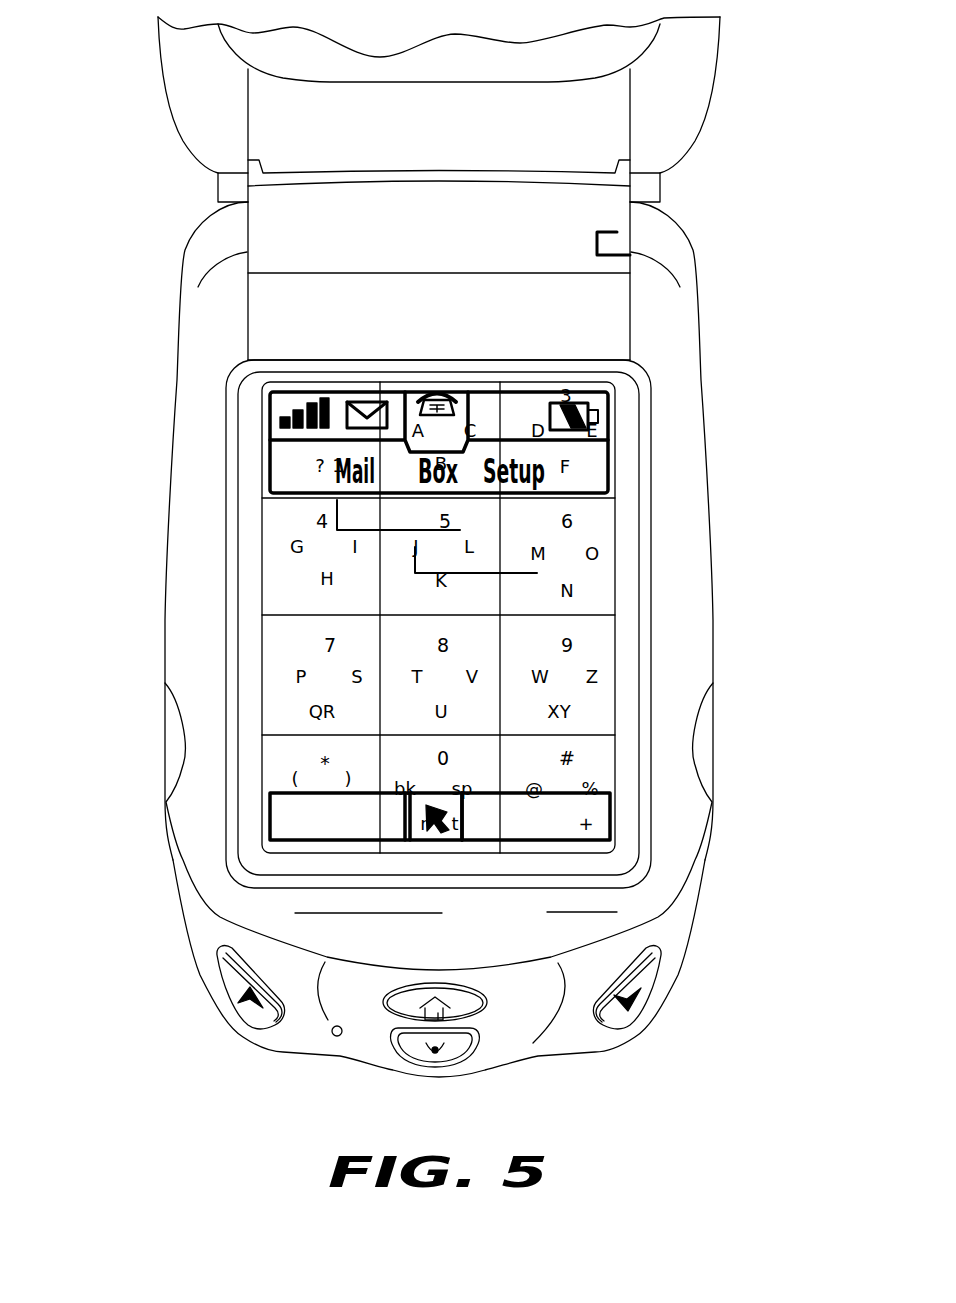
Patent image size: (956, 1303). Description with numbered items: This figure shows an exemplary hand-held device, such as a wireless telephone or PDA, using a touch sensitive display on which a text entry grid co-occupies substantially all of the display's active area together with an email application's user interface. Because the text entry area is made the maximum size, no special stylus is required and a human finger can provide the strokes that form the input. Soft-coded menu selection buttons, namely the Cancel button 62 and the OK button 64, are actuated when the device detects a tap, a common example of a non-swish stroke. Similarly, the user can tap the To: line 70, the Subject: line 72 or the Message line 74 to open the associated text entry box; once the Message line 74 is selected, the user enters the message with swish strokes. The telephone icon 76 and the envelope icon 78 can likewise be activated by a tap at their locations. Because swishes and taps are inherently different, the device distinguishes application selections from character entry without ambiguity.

The Cancel button 62 is at (270, 820).
The OK button 64 is at (612, 820).
The "To:" line 70 is at (282, 523).
The "Subject:" line 72 is at (282, 562).
The "Message" line 74 is at (282, 597).
The telephone icon 76 is at (453, 402).
The envelope icon 78 is at (367, 410).